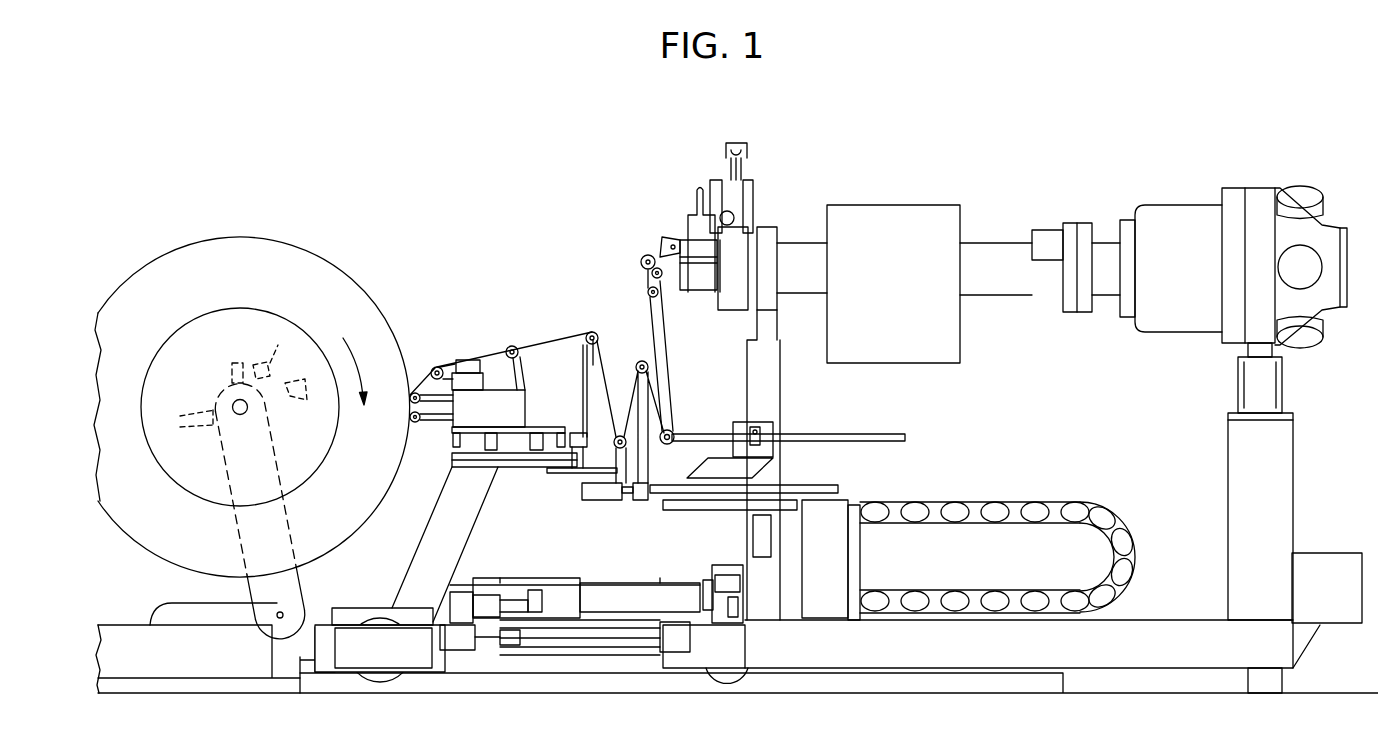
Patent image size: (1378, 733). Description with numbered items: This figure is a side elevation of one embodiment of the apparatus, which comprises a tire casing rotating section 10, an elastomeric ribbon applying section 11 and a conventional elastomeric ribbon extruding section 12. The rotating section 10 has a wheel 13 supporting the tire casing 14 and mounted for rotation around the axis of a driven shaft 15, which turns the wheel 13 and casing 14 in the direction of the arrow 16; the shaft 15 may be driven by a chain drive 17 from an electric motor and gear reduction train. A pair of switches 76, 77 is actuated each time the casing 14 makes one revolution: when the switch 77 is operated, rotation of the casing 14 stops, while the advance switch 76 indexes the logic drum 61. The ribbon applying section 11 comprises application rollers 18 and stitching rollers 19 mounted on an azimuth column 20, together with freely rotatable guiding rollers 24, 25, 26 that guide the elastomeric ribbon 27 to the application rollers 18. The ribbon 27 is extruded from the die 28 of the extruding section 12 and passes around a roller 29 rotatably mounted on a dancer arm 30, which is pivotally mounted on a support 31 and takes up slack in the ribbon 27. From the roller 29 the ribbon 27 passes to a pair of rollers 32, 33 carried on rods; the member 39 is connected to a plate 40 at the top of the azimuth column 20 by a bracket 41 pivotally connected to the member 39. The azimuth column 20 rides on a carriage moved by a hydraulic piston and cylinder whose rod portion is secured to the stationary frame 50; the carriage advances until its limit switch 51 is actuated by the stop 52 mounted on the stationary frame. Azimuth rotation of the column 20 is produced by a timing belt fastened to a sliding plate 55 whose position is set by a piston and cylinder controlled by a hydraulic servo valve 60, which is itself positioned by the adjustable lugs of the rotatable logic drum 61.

The tire casing rotating section 10 is at (283, 236).
The elastomeric ribbon applying section 11 is at (498, 322).
The elastomeric ribbon extruding section 12 is at (1033, 198).
The wheel 13 is at (178, 331).
The tire casing 14 is at (354, 290).
The driven shaft 15 is at (240, 415).
The arrow 16 is at (362, 370).
The chain drive 17 is at (300, 587).
The application rollers 18 is at (409, 401).
The stitching rollers 19 is at (414, 423).
The azimuth column 20 is at (474, 530).
The guiding roller 24 is at (437, 366).
The guiding roller 25 is at (519, 352).
The guiding roller 26 is at (598, 337).
The elastomeric ribbon 27 is at (538, 342).
The die 28 is at (673, 292).
The roller 29 is at (671, 445).
The dancer arm 30 is at (716, 421).
The support 31 is at (762, 428).
The roller 32 is at (642, 362).
The roller 33 is at (598, 411).
The member 39 is at (596, 500).
The plate 40 is at (503, 468).
The bracket 41 is at (568, 474).
The stationary frame 50 is at (1150, 614).
The limit switch 51 is at (332, 672).
The stop 52 is at (303, 660).
The plate 55 is at (563, 580).
The hydraulic servo valve 60 is at (488, 600).
The logic drum 61 is at (598, 660).
The advance switch 76 is at (246, 404).
The switch 77 is at (277, 352).